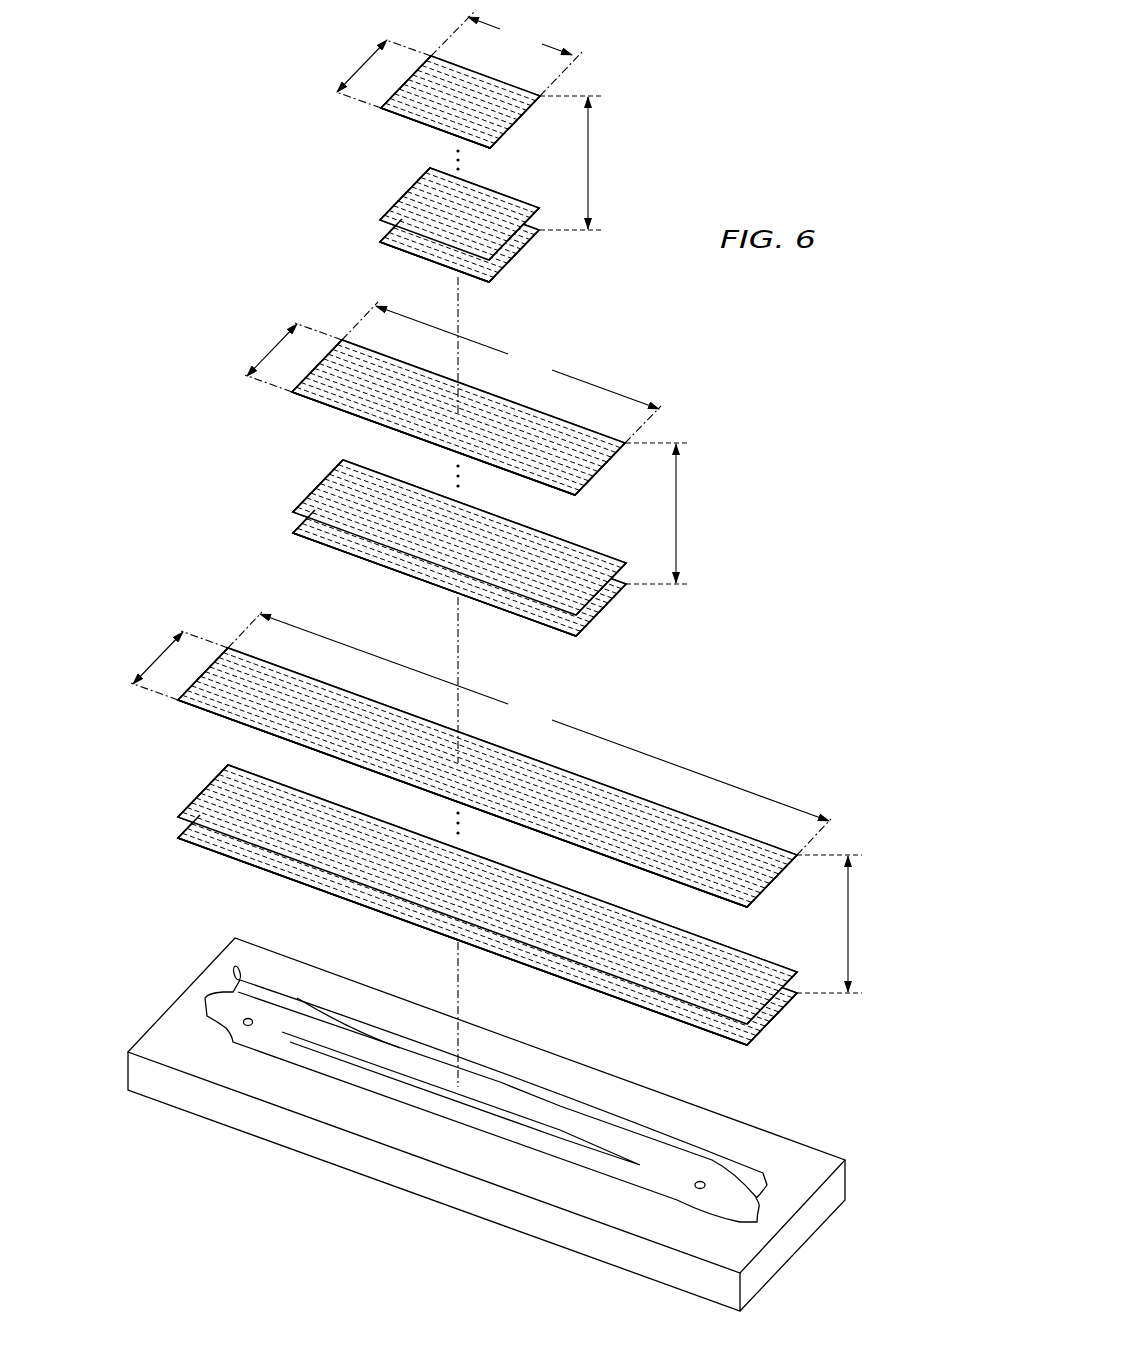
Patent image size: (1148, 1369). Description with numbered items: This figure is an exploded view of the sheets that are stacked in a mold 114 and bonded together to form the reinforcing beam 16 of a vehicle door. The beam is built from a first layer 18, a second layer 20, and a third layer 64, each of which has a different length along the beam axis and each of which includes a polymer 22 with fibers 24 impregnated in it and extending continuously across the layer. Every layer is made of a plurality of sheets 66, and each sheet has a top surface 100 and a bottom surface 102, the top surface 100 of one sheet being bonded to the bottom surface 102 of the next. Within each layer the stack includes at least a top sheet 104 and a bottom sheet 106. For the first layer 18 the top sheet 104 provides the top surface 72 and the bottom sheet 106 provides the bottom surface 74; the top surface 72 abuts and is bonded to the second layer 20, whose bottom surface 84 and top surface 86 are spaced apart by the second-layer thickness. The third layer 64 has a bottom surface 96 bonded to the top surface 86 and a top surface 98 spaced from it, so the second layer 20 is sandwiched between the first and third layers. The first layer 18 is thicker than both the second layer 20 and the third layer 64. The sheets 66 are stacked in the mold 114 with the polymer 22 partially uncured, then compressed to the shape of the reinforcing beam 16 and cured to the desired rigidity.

The reinforcing beam 16 is at (170, 112).
The first layer 18 is at (870, 883).
The second layer 20 is at (732, 463).
The polymer 22 is at (490, 200).
The fibers 24 is at (481, 233).
The third layer 64 is at (642, 118).
The sheets 66 is at (377, 237).
The top surface of the first layer 72 is at (733, 832).
The bottom surface of the first layer 74 is at (720, 1041).
The bottom surface of the second layer 84 is at (564, 640).
The top surface of the second layer 86 is at (566, 418).
The bottom surface of the third layer 96 is at (478, 285).
The top surface of the third layer 98 is at (500, 84).
The top surface of the sheet 100 is at (505, 112).
The bottom surface of the sheet 102 is at (432, 132).
The top sheet 104 is at (403, 117).
The bottom sheet 106 is at (406, 251).
The mold 114 is at (805, 1140).